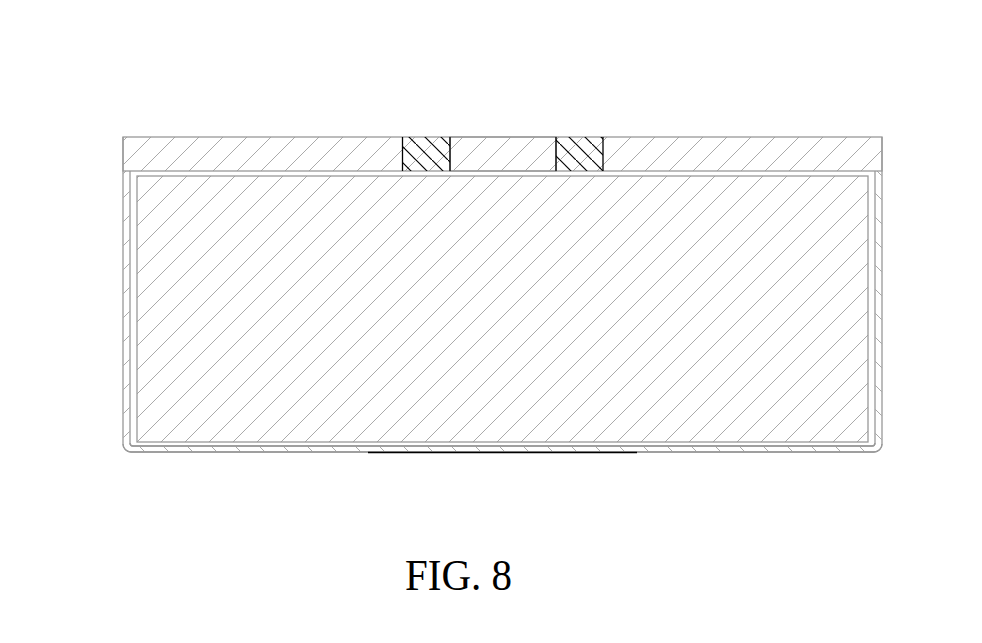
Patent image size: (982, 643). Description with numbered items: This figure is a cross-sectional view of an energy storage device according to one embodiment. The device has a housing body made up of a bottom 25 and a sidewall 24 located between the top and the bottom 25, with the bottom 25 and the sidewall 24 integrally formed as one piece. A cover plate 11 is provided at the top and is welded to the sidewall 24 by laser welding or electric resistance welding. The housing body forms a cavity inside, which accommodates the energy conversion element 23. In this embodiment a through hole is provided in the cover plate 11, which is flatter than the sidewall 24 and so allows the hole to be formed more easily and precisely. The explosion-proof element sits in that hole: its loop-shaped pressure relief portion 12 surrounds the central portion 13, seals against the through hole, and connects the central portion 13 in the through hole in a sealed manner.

The cover plate 11 is at (710, 137).
The pressure relief portion 12 is at (422, 137).
The central portion 13 is at (502, 137).
The energy conversion element 23 is at (195, 200).
The sidewall 24 is at (123, 252).
The bottom 25 is at (183, 453).